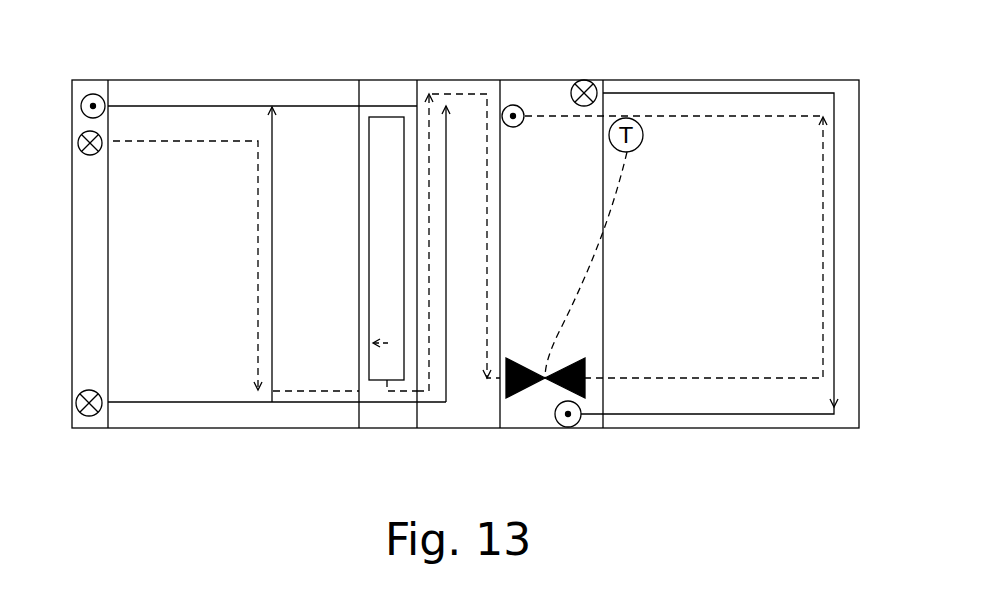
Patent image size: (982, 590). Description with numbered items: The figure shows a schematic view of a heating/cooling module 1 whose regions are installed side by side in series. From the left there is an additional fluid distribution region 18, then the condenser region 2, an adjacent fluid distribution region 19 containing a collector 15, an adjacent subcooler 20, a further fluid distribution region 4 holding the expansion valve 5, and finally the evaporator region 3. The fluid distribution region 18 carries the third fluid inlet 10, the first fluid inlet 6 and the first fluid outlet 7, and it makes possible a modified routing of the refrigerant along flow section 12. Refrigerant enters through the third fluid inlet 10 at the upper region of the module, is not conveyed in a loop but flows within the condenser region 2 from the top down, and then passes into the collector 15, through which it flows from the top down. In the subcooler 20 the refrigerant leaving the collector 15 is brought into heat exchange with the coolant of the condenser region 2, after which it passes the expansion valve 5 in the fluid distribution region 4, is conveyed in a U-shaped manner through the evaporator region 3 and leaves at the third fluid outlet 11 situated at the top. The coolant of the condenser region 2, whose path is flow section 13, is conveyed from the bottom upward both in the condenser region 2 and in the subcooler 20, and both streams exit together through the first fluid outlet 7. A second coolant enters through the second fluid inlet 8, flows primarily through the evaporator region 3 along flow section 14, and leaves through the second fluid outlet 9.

The heating/cooling module 1 is at (455, 42).
The condenser region 2 is at (242, 80).
The evaporator region 3 is at (710, 80).
The fluid distribution region 4 is at (558, 80).
The expansion valve 5 is at (552, 385).
The first fluid inlet 6 is at (88, 417).
The first fluid outlet 7 is at (95, 93).
The second fluid inlet 8 is at (592, 84).
The second fluid outlet 9 is at (566, 428).
The third fluid inlet 10 is at (78, 143).
The third fluid outlet 11 is at (512, 103).
The flow section 12 is at (137, 142).
The flow section 13 is at (168, 105).
The flow section 14 is at (834, 247).
The collector 15 is at (392, 125).
The fluid distribution region 18 is at (90, 264).
The fluid distribution region 19 is at (385, 417).
The subcooler 20 is at (465, 418).